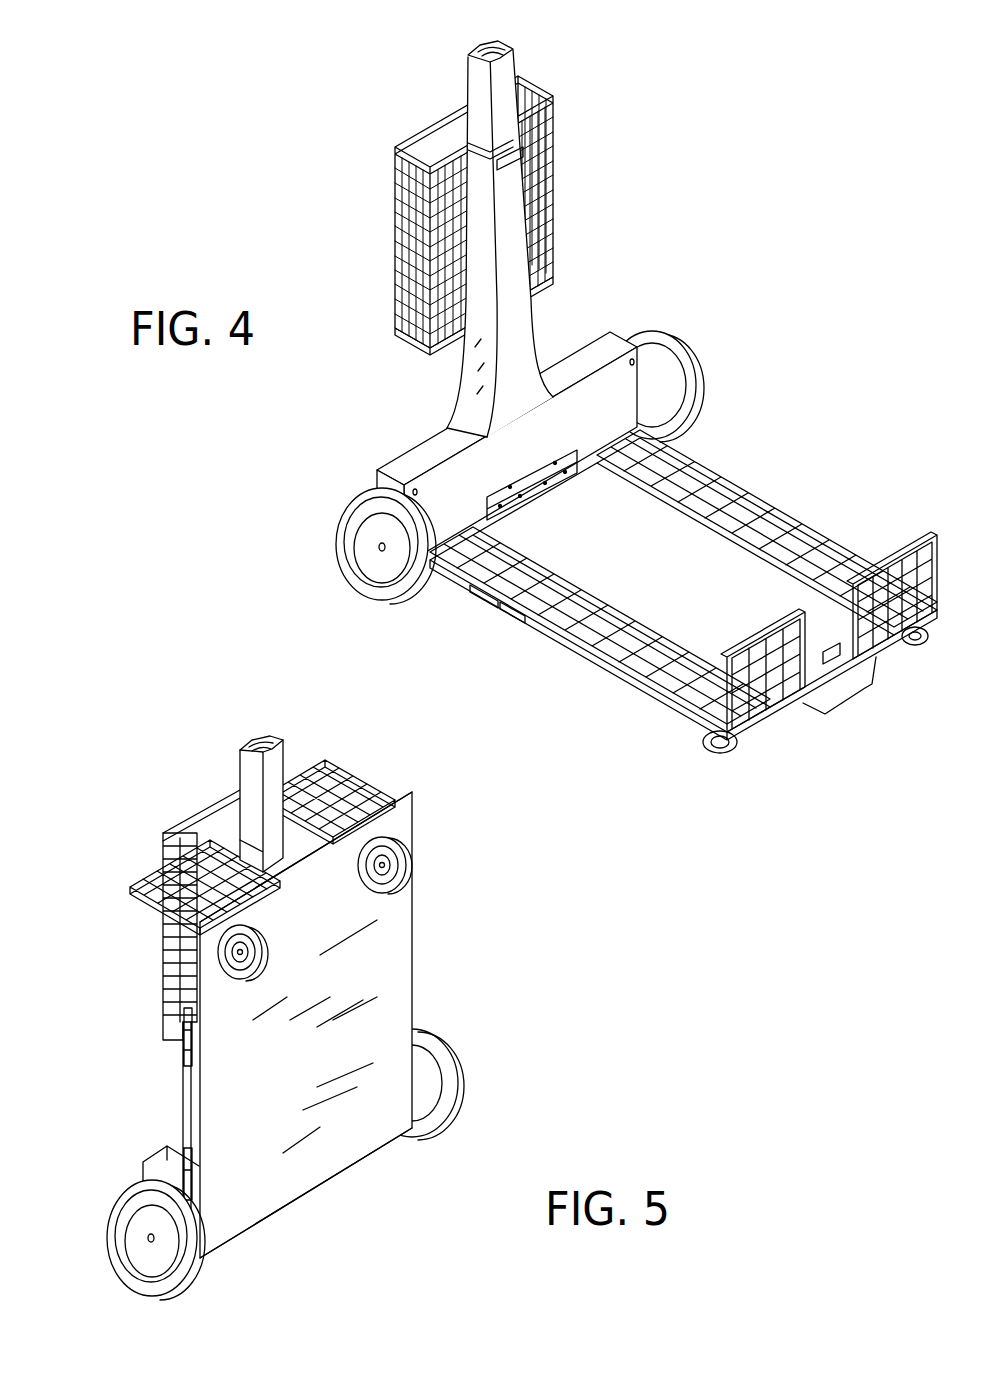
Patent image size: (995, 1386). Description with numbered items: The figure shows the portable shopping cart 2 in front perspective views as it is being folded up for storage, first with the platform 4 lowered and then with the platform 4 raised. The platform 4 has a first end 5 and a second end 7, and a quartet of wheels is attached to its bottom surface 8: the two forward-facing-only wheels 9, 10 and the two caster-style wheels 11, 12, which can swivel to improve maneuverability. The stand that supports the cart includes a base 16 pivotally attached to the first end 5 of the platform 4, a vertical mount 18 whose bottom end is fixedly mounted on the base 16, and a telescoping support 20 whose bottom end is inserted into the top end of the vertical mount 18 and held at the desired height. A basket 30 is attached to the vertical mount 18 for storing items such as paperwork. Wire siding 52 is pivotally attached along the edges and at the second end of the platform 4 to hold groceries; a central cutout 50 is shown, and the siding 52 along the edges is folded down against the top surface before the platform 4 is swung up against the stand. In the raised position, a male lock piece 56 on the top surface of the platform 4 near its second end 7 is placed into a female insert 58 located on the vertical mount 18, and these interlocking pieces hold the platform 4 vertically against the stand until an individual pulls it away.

In FIG. 4, the portable shopping cart 2 is at (792, 251).
In FIG. 4, the platform 4 is at (670, 550).
In FIG. 5, the platform 4 is at (400, 953).
In FIG. 5, the first end 5 is at (392, 797).
In FIG. 5, the second end 7 is at (330, 1180).
In FIG. 5, the bottom surface 8 is at (222, 1077).
In FIG. 4, the wheel 9 is at (397, 598).
In FIG. 5, the wheel 9 is at (107, 1220).
In FIG. 4, the wheel 10 is at (668, 347).
In FIG. 5, the wheel 10 is at (458, 1090).
In FIG. 4, the wheel 11 is at (721, 754).
In FIG. 5, the wheel 11 is at (217, 943).
In FIG. 4, the wheel 12 is at (912, 637).
In FIG. 5, the wheel 12 is at (410, 863).
In FIG. 4, the base 16 is at (430, 457).
In FIG. 4, the vertical mount 18 is at (467, 390).
In FIG. 4, the telescoping support 20 is at (503, 63).
In FIG. 4, the basket 30 is at (395, 213).
In FIG. 4, the central cutout 50 is at (842, 707).
In FIG. 4, the wire siding 52 is at (780, 527).
In FIG. 5, the wire siding 52 is at (157, 877).
In FIG. 4, the male lock piece 56 is at (830, 592).
In FIG. 4, the female insert 58 is at (523, 155).